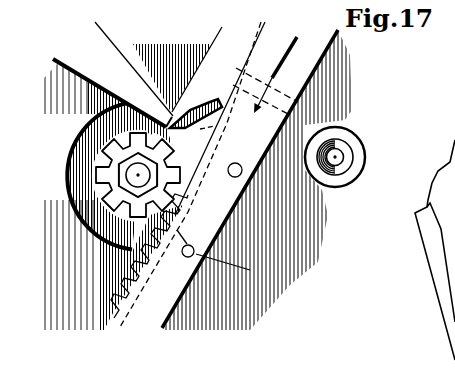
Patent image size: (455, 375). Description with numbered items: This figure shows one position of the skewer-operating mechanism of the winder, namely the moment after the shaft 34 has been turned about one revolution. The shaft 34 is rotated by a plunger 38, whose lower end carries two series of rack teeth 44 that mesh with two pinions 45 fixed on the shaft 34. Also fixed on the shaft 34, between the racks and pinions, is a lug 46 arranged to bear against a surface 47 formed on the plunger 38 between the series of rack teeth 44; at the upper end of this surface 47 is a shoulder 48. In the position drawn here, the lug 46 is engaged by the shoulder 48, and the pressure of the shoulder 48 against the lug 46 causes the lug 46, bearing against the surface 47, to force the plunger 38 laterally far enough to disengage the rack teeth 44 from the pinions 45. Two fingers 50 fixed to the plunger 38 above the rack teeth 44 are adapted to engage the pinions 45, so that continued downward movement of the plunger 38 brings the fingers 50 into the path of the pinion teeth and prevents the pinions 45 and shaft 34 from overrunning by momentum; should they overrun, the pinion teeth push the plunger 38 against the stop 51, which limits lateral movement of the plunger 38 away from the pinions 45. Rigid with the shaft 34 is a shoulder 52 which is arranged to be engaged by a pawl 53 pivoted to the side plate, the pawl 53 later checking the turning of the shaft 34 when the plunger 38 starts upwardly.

The shaft 34 is at (136, 174).
The plunger 38 is at (308, 74).
The rack teeth 44 is at (100, 302).
The pinions 45 is at (118, 182).
The lug 46 is at (165, 125).
The surface 47 is at (250, 270).
The shoulder 48 is at (262, 79).
The fingers 50 is at (227, 76).
The stop 51 is at (335, 187).
The shoulder 52 is at (101, 196).
The pawl 53 is at (137, 65).